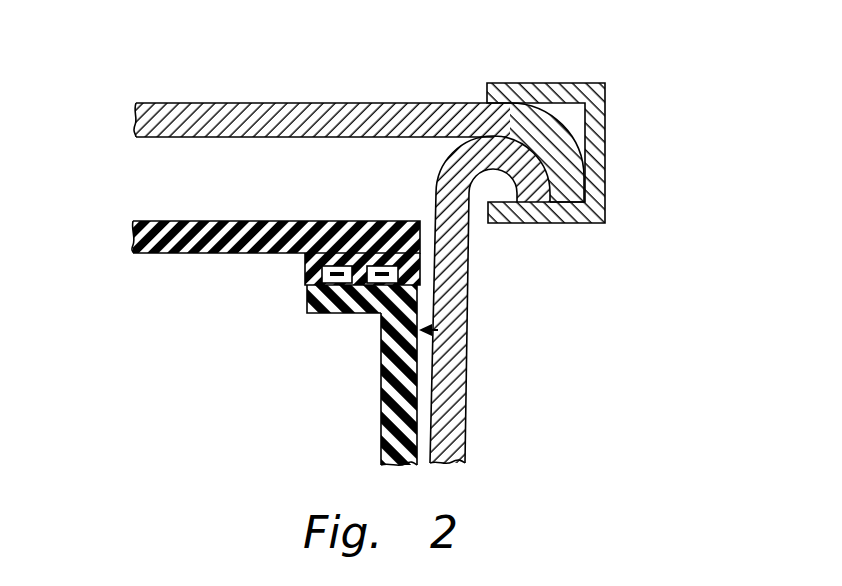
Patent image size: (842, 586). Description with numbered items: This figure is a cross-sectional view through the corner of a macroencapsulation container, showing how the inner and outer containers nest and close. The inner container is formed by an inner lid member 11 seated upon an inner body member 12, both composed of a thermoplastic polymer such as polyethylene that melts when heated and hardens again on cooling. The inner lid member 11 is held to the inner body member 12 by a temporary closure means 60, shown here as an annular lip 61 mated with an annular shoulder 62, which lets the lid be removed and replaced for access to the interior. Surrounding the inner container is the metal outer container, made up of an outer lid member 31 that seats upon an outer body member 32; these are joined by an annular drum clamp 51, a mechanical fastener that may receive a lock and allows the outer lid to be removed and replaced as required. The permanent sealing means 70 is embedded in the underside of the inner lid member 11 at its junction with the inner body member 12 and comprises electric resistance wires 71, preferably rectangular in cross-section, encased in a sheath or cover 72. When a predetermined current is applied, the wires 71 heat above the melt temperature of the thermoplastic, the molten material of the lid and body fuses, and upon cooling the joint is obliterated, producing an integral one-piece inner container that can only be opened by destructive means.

The inner lid member 11 is at (192, 221).
The inner body member 12 is at (380, 428).
The outer lid member 31 is at (283, 103).
The outer body member 32 is at (463, 450).
The annular drum clamp 51 is at (605, 145).
The temporary closure means 60 is at (440, 333).
The annular lip 61 is at (417, 302).
The annular shoulder 62 is at (390, 317).
The permanent sealing means 70 is at (345, 246).
The electric resistance wires 71 is at (388, 316).
The sheath or cover 72 is at (400, 266).